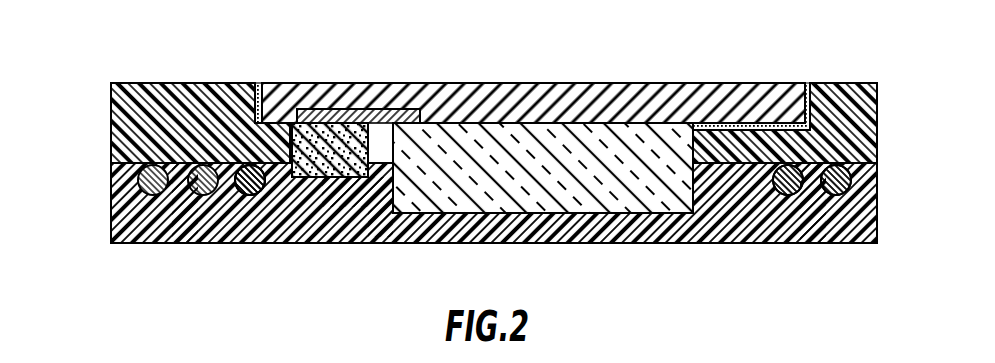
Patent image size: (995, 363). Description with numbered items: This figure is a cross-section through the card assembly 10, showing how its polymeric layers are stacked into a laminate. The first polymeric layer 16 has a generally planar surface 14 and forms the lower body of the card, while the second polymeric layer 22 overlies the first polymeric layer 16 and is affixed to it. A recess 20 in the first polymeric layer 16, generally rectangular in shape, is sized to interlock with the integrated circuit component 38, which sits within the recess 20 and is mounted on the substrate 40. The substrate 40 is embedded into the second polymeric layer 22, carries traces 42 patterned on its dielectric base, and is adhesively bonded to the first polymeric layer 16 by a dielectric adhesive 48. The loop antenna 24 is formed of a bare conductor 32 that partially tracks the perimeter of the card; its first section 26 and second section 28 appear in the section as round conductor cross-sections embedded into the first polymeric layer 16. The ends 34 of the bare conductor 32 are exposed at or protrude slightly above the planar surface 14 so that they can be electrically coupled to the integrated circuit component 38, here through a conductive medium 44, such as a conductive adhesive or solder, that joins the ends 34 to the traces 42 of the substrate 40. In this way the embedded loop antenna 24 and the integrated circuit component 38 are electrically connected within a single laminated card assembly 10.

The card assembly 10 is at (496, 41).
The planar surface 14 is at (113, 181).
The first polymeric layer 16 is at (220, 233).
The recess 20 is at (394, 207).
The second polymeric layer 22 is at (154, 90).
The loop antenna 24 is at (186, 199).
The first section 26 is at (260, 190).
The second section 28 is at (140, 187).
The bare conductor 32 is at (243, 198).
The ends 34 is at (334, 187).
The integrated circuit component 38 is at (472, 204).
The substrate 40 is at (698, 85).
The traces 42 is at (355, 110).
The conductive medium 44 is at (320, 132).
The dielectric adhesive 48 is at (258, 88).